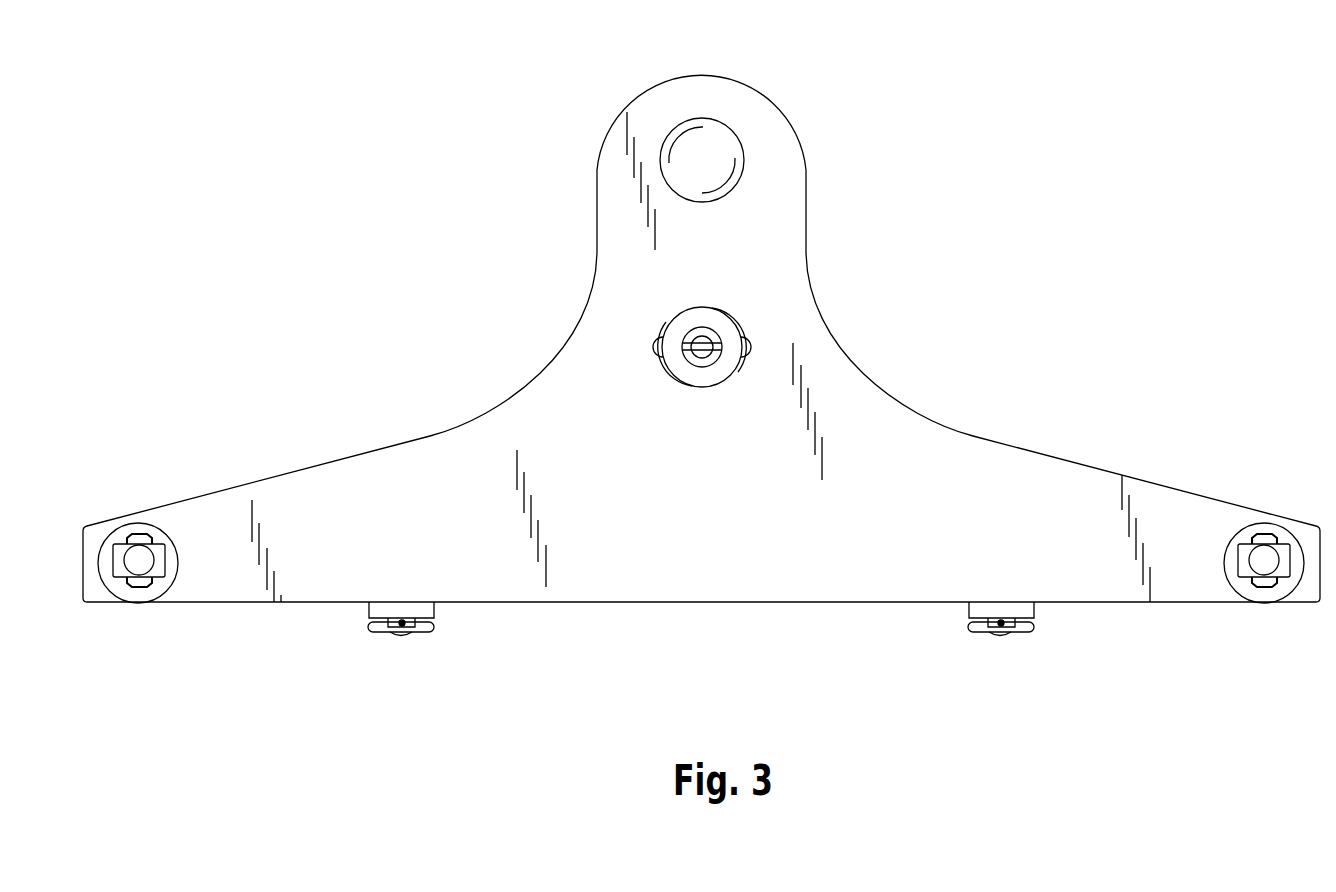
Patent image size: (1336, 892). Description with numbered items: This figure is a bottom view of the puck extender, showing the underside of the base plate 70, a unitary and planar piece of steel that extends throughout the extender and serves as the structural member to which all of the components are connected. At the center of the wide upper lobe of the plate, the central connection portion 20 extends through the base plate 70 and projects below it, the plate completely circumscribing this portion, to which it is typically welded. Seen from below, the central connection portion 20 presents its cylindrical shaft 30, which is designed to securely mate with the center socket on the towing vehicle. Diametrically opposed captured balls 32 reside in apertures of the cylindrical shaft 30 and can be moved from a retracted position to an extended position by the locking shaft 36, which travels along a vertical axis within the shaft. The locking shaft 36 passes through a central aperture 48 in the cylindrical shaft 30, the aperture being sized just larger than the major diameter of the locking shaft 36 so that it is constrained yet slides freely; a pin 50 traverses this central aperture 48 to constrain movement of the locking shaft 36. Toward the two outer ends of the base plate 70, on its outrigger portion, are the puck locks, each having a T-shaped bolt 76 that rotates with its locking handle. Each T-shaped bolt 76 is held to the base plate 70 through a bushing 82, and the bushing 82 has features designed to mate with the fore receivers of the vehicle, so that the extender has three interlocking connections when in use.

The central connection portion 20 is at (740, 310).
The cylindrical shaft 30 is at (686, 318).
The captured balls 32 is at (645, 347).
The locking shaft 36 is at (703, 357).
The central aperture 48 is at (688, 362).
The pin 50 is at (703, 345).
The base plate 70 is at (722, 553).
The T-shaped bolt 76 is at (163, 565).
The bushing 82 is at (138, 528).